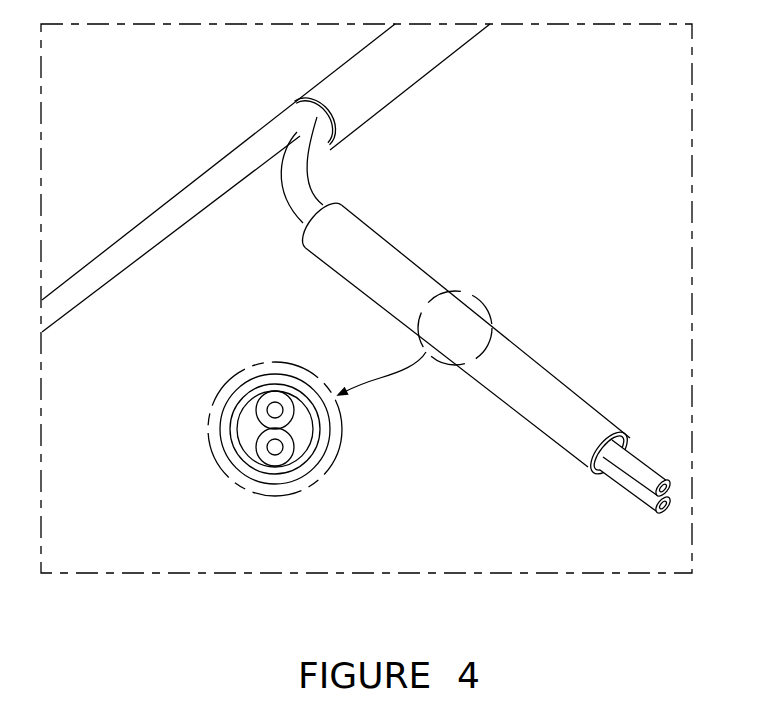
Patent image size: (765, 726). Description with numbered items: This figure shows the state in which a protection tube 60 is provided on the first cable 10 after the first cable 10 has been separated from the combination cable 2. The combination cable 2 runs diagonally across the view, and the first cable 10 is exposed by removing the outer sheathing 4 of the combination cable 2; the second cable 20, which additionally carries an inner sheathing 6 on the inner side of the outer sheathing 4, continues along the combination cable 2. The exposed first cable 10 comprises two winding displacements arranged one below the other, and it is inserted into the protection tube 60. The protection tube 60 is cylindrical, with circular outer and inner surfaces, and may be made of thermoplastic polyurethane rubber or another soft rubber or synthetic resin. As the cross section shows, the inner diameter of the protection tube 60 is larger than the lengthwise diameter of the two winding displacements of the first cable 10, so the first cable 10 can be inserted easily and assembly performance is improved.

The combination cable 2 is at (451, 76).
The outer sheathing 4 is at (324, 118).
The inner sheathing 6 is at (237, 158).
The first cable 10 is at (568, 368).
The second cable 20 is at (166, 200).
The protection tube 60 is at (414, 258).